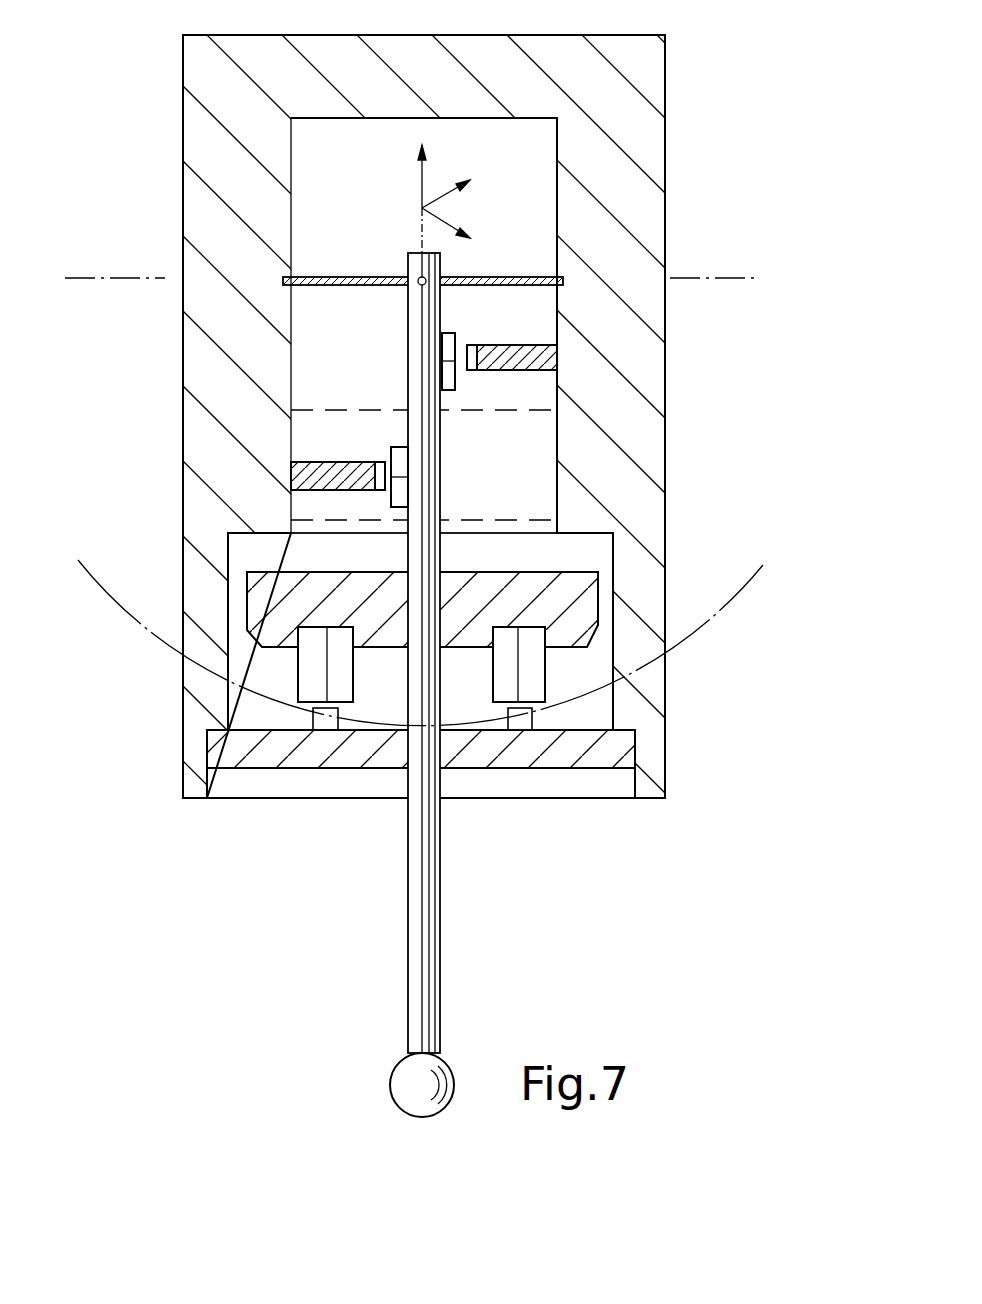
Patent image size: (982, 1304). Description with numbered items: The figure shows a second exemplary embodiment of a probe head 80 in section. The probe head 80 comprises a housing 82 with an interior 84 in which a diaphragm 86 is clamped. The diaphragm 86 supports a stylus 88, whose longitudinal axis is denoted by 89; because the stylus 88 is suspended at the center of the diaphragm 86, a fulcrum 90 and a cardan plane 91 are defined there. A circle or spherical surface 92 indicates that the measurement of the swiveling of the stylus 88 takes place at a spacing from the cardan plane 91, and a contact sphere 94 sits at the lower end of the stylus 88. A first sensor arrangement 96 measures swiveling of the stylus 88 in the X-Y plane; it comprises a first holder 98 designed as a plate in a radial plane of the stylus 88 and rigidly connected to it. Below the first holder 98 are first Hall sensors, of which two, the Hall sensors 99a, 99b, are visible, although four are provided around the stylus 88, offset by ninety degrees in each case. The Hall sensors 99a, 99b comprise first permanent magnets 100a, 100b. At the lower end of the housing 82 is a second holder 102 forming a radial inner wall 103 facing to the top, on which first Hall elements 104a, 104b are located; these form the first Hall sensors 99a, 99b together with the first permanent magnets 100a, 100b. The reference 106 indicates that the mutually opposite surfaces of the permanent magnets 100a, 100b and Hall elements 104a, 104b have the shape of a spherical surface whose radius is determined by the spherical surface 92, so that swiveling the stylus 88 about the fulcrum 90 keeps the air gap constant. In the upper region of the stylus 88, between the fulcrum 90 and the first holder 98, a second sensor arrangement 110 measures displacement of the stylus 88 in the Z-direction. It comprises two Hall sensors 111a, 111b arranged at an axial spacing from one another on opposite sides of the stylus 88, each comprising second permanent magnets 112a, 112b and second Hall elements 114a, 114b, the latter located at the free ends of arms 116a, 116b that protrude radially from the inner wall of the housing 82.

The probe head 80 is at (718, 100).
The housing 82 is at (655, 223).
The interior 84 is at (548, 486).
The diaphragm 86 is at (332, 276).
The stylus 88 is at (408, 350).
The longitudinal axis 89 is at (420, 222).
The fulcrum 90 is at (420, 283).
The cardan plane 91 is at (75, 270).
The circle or spherical surface 92 is at (718, 612).
The contact sphere 94 is at (410, 1085).
The first sensor arrangement 96 is at (217, 615).
The first holder 98 is at (290, 590).
The first Hall sensor 99a is at (262, 707).
The first Hall sensor 99b is at (567, 708).
The first permanent magnet 100a is at (345, 655).
The first permanent magnet 100b is at (510, 643).
The second holder 102 is at (265, 757).
The radial inner wall 103 is at (252, 720).
The first Hall element 104a is at (322, 730).
The first Hall element 104b is at (530, 705).
The spherical surface shape of opposite surfaces 106 is at (540, 705).
The second sensor arrangement 110 is at (337, 372).
The second Hall sensor 111a is at (384, 454).
The second Hall sensor 111b is at (462, 383).
The second permanent magnet 112a is at (451, 333).
The second permanent magnet 112b is at (399, 507).
The second Hall element 114a is at (470, 370).
The second Hall element 114b is at (380, 470).
The arm 116a is at (557, 322).
The arm 116b is at (341, 490).